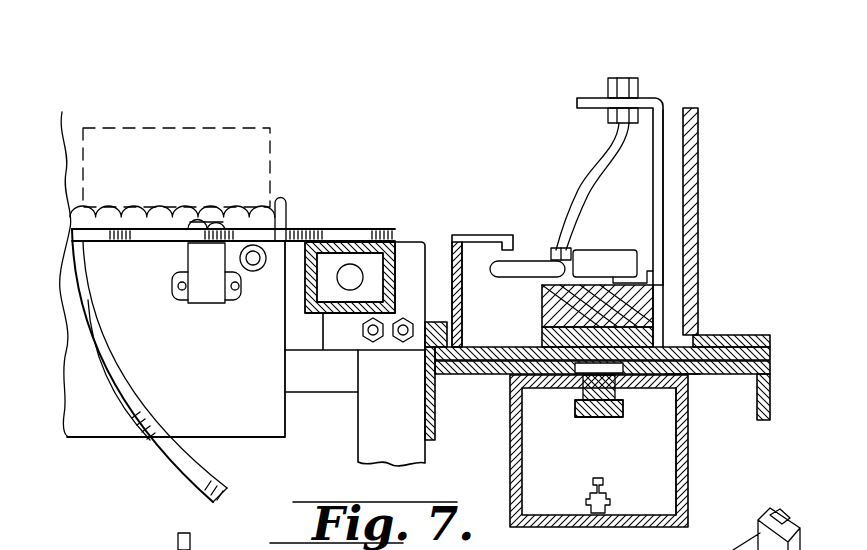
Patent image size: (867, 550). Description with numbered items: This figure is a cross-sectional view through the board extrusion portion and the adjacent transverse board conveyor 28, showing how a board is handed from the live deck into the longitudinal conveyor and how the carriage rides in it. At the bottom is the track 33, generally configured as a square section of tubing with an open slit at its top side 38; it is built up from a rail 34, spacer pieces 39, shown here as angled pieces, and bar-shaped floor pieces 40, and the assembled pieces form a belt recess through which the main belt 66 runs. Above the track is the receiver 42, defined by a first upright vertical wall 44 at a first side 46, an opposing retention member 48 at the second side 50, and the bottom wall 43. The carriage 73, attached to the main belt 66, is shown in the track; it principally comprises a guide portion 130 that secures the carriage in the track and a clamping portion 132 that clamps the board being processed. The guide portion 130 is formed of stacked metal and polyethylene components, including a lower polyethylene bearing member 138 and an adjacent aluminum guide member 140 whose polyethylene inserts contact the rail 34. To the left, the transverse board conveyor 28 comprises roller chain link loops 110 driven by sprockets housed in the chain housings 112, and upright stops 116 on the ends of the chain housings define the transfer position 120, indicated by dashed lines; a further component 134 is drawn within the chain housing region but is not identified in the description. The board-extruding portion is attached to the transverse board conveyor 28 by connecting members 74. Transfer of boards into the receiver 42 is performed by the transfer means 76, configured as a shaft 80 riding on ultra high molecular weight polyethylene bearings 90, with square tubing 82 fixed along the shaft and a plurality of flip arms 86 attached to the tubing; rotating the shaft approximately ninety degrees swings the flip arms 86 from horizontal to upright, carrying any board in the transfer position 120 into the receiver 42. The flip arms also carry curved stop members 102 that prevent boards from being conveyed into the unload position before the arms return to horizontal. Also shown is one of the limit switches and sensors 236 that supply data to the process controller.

The transverse board conveyor 28 is at (117, 418).
The track 33 is at (690, 460).
The rail 34 is at (688, 435).
The top side 38 is at (675, 374).
The spacer pieces 39 is at (770, 368).
The floor pieces 40 is at (745, 334).
The receiver 42 is at (567, 162).
The bottom wall 43 is at (580, 98).
The first upright vertical wall 44 is at (701, 150).
The first side 46 is at (684, 122).
The retention member 48 is at (473, 235).
The second side 50 is at (513, 248).
The main belt 66 is at (502, 310).
The carriage 73 is at (660, 278).
The connecting members 74 is at (328, 378).
The transfer means 76 is at (397, 214).
The shaft 80 is at (347, 275).
The square tubing 82 is at (367, 242).
The flip arms 86 is at (213, 227).
The bearings 90 is at (410, 253).
The curved stop members 102 is at (108, 370).
The roller chain link loops 110 is at (68, 261).
The chain housings 112 is at (267, 410).
The upright stops 116 is at (283, 200).
The transfer position 120 is at (162, 126).
The guide portion 130 is at (645, 310).
The clamping portion 132 is at (697, 328).
The bracket 134 is at (212, 283).
The lower polyethylene bearing member 138 is at (625, 417).
The guide member 140 is at (620, 417).
The limit switches and sensors 236 is at (788, 517).